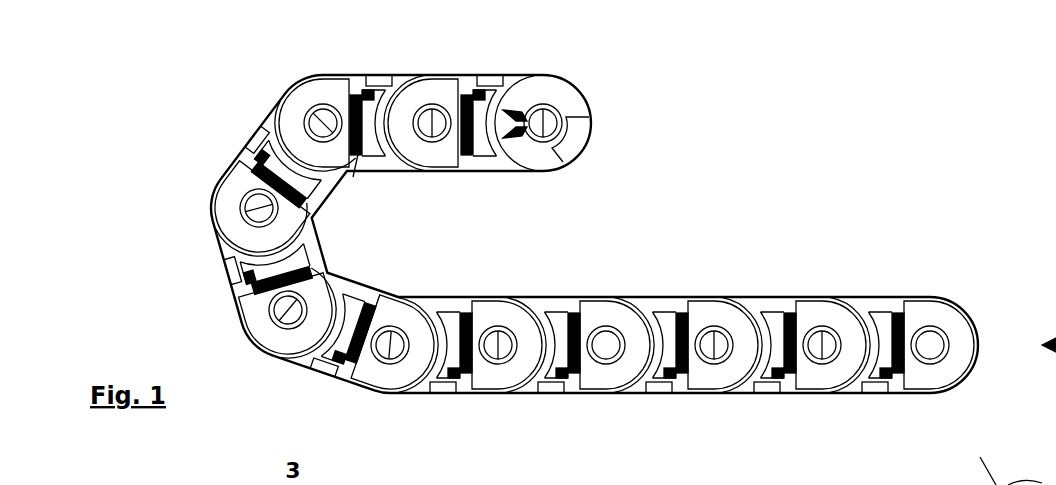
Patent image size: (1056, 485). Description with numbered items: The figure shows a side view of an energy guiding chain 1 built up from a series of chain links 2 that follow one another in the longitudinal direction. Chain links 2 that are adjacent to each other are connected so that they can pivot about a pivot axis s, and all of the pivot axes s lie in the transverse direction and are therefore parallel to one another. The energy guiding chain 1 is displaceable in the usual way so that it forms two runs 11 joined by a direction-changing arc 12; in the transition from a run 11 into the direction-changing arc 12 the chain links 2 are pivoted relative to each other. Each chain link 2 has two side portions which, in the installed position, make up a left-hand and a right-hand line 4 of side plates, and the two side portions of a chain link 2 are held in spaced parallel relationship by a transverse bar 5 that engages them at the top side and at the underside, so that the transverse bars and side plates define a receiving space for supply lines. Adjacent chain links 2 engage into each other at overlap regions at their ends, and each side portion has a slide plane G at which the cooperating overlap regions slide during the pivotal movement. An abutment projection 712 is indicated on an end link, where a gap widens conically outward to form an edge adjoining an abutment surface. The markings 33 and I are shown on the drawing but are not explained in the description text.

The energy guiding chain 1 is at (197, 112).
The run 11 is at (607, 112).
The direction-changing arc 12 is at (214, 228).
The chain link 2 is at (447, 295).
The line of side plates 4 is at (979, 343).
The transverse bar 5 is at (660, 388).
The pivot axis s is at (607, 347).
The latch detail of end link 33 is at (570, 143).
The abutment projection 712 is at (517, 113).
The section direction I is at (1043, 343).
The slide plane G is at (977, 460).